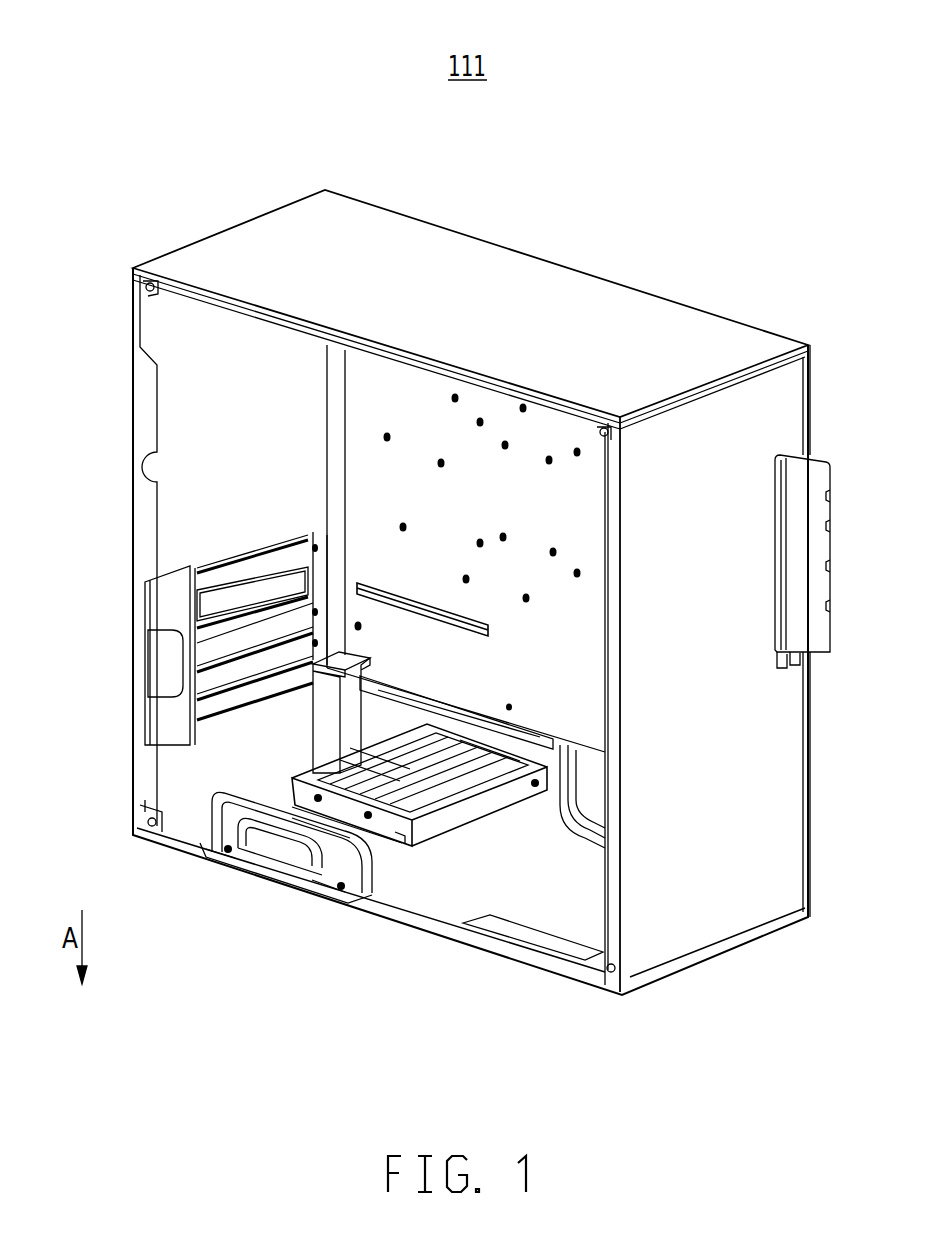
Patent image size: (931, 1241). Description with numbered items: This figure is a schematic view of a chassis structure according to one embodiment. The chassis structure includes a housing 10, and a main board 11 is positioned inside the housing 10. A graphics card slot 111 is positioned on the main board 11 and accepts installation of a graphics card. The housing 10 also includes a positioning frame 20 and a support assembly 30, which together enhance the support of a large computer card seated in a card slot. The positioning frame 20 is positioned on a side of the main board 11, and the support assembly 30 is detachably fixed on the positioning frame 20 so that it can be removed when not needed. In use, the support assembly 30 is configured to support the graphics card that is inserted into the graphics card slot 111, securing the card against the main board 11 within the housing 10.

The housing 10 is at (240, 237).
The main board 11 is at (572, 422).
The graphics card slot 111 is at (360, 582).
The positioning frame 20 is at (335, 807).
The support assembly 30 is at (323, 729).